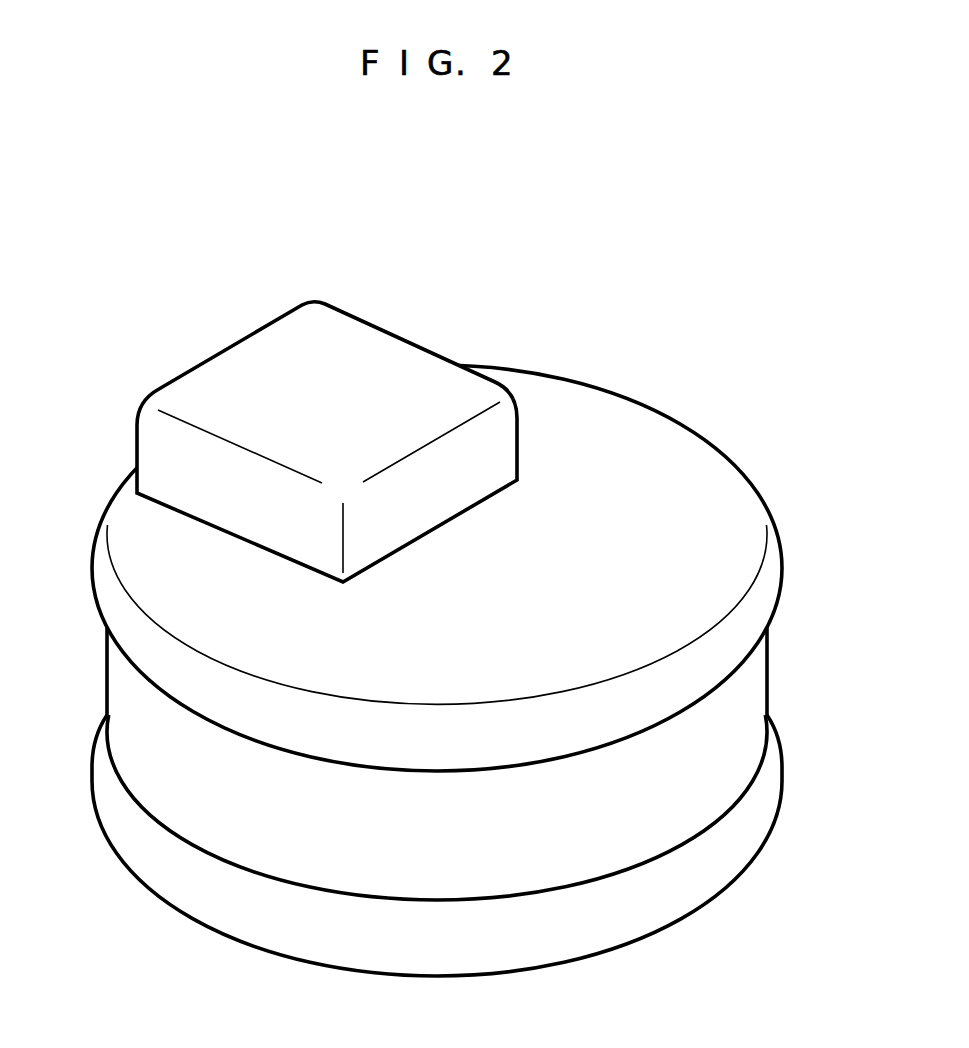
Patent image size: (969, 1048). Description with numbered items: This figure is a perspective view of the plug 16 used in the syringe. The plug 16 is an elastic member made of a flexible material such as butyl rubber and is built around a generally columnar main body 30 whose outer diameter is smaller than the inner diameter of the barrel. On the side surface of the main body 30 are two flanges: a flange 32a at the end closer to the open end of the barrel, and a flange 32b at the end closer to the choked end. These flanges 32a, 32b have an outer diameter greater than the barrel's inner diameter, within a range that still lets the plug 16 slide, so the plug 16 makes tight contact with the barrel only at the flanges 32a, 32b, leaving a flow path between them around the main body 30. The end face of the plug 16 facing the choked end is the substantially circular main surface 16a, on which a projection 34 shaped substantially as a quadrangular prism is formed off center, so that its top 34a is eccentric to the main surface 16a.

The plug 16 is at (187, 358).
The main surface 16a is at (687, 483).
The main body 30 is at (268, 842).
The flange 32a is at (753, 813).
The flange 32b is at (760, 607).
The projection 34 is at (167, 470).
The top 34a is at (377, 357).